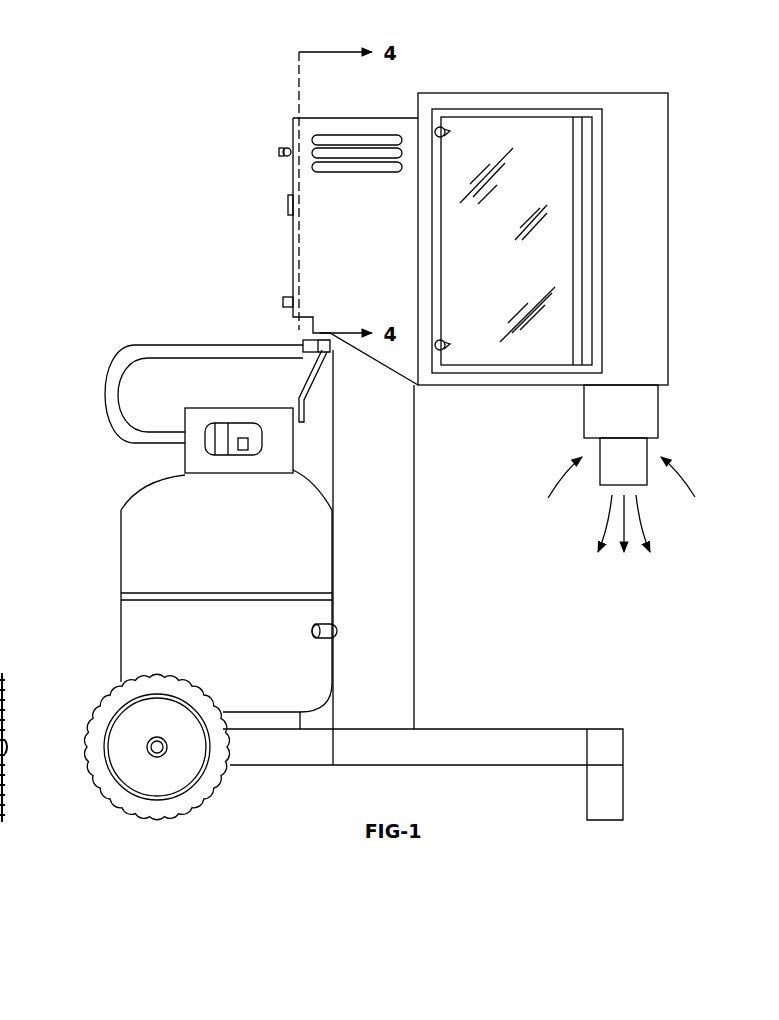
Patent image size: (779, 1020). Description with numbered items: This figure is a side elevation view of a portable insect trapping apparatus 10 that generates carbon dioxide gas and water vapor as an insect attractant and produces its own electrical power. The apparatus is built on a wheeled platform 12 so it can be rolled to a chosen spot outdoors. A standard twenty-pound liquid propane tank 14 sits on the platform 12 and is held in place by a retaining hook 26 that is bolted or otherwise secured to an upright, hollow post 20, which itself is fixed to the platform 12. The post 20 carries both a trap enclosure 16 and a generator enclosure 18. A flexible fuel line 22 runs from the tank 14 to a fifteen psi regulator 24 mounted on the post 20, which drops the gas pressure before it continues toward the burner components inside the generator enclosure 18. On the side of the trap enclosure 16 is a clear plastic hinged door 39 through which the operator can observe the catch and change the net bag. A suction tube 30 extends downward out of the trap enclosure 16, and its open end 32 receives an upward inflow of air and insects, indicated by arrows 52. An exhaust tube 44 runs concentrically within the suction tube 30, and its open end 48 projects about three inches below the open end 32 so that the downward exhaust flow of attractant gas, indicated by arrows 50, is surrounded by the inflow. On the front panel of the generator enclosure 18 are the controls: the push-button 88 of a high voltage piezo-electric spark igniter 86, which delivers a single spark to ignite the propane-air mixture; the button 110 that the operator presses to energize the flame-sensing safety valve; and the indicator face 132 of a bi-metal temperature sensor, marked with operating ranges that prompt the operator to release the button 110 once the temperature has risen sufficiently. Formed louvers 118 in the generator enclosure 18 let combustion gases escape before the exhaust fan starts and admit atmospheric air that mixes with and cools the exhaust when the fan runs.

The portable insect trapping apparatus 10 is at (124, 218).
The wheeled platform 12 is at (460, 729).
The tank 14 is at (121, 510).
The trap enclosure 16 is at (594, 92).
The generator enclosure 18 is at (293, 252).
The post 20 is at (415, 630).
The flexible fuel line 22 is at (125, 345).
The regulator 24 is at (320, 340).
The retaining hook 26 is at (304, 395).
The suction tube 30 is at (660, 418).
The open end of suction tube 32 is at (590, 440).
The hinged door 39 is at (513, 132).
The exhaust tube 44 is at (600, 478).
The open end of exhaust tube 48 is at (645, 490).
The exhaust flow arrows 50 is at (605, 522).
The inflow arrows 52 is at (678, 490).
The piezo-electric spark igniter 86 is at (281, 137).
The push-button 88 is at (280, 150).
The button 110 is at (283, 300).
The louvers 118 is at (318, 135).
The indicator face 132 is at (290, 200).